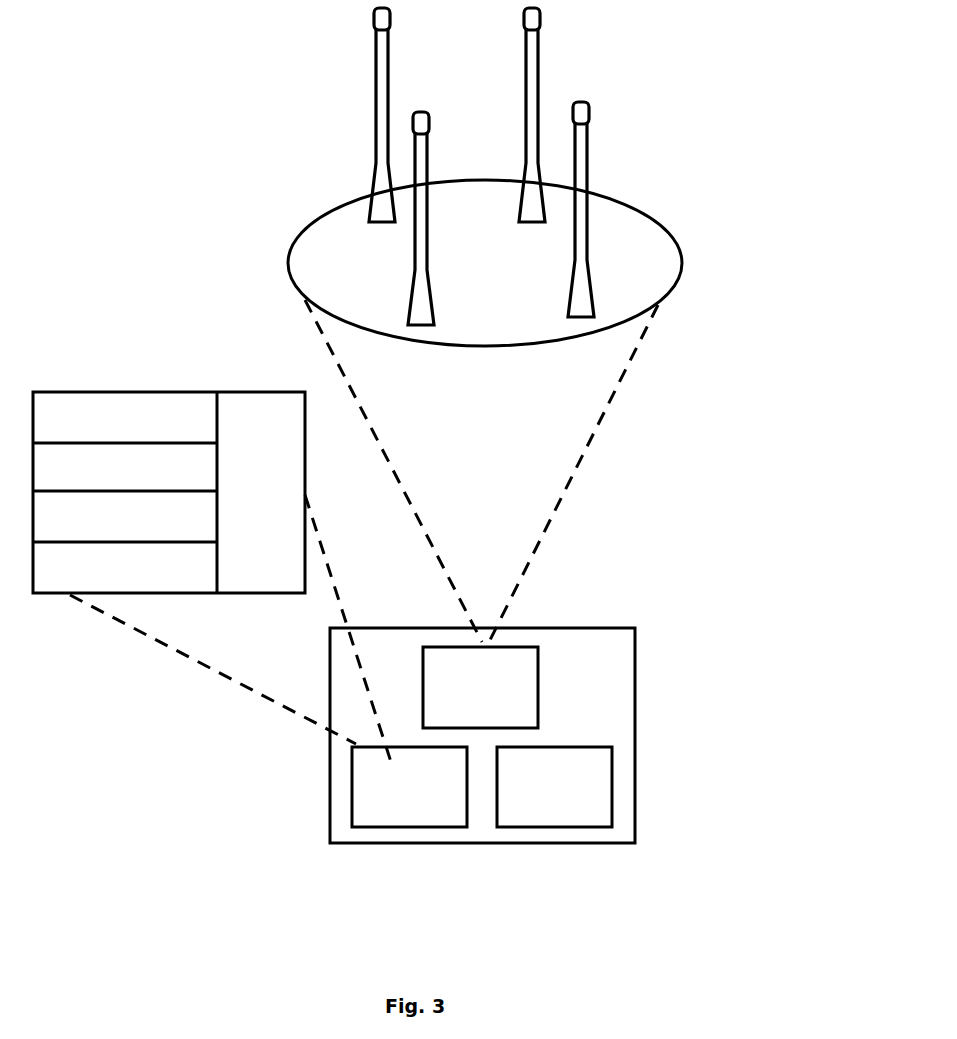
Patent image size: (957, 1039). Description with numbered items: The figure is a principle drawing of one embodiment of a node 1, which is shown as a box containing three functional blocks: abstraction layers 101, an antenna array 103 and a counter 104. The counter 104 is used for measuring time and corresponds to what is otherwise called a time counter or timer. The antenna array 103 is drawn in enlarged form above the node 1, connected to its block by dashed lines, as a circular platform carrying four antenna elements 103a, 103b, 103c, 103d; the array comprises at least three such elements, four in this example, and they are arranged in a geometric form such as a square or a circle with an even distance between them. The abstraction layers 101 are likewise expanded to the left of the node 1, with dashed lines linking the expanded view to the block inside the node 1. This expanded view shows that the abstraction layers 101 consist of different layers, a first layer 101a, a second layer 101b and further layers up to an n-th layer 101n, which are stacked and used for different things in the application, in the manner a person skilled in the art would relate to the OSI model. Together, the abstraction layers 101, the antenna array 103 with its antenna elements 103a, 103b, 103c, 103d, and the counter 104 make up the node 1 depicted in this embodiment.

The node 1 is at (636, 797).
The abstraction layers 101 is at (250, 609).
The layer 101a is at (125, 570).
The layer 101b is at (124, 517).
The layer 101n is at (124, 421).
The antenna array 103 is at (519, 368).
The antenna element 103a is at (378, 90).
The antenna element 103b is at (410, 287).
The antenna element 103c is at (540, 83).
The antenna element 103d is at (590, 242).
The counter 104 is at (554, 787).